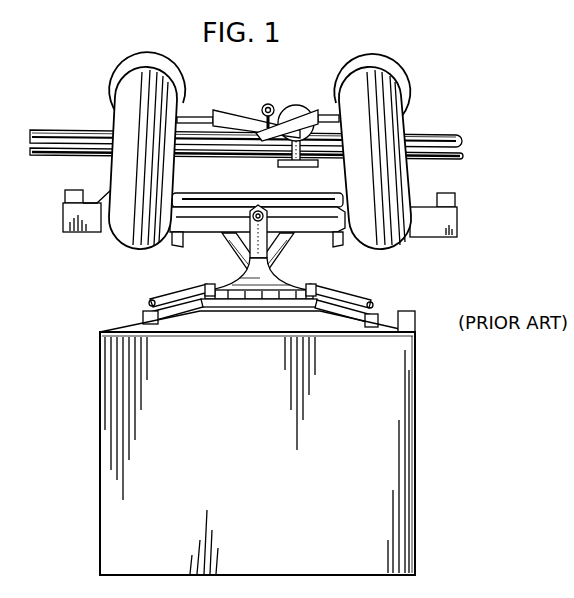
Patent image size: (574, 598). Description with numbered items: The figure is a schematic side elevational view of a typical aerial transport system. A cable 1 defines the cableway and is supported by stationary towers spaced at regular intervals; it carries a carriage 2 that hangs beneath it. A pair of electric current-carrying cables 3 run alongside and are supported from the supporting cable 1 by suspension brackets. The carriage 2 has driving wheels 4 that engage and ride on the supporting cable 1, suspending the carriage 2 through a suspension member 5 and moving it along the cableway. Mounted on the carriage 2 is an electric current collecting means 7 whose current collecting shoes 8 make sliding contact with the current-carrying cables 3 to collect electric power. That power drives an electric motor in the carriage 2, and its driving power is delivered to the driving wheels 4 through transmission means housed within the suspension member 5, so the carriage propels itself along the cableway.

The cable 1 is at (448, 137).
The carriage 2 is at (265, 463).
The electric current-carrying cables 3 is at (457, 160).
The driving wheels 4 is at (118, 68).
The suspension member 5 is at (103, 163).
The electric current collecting means 7 is at (274, 104).
The current collecting shoes 8 is at (314, 167).